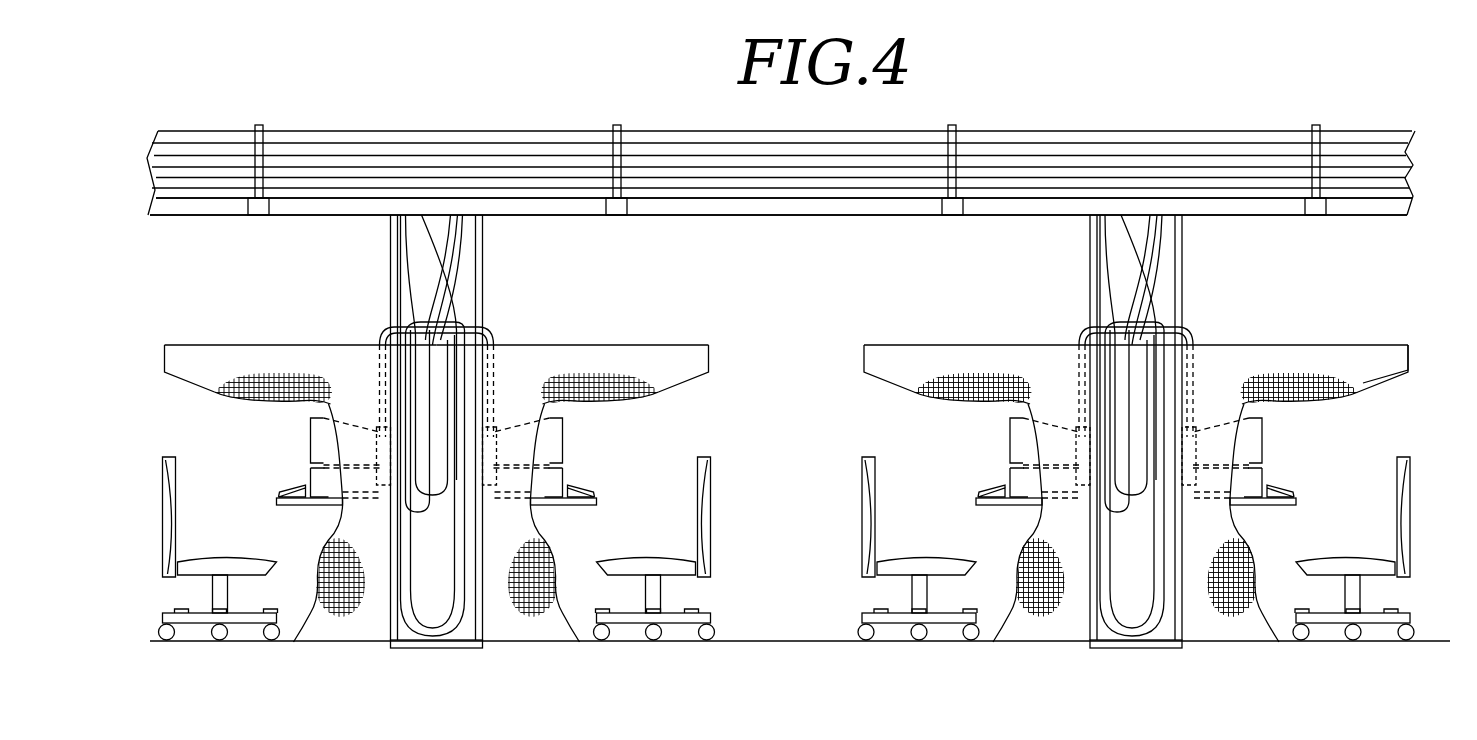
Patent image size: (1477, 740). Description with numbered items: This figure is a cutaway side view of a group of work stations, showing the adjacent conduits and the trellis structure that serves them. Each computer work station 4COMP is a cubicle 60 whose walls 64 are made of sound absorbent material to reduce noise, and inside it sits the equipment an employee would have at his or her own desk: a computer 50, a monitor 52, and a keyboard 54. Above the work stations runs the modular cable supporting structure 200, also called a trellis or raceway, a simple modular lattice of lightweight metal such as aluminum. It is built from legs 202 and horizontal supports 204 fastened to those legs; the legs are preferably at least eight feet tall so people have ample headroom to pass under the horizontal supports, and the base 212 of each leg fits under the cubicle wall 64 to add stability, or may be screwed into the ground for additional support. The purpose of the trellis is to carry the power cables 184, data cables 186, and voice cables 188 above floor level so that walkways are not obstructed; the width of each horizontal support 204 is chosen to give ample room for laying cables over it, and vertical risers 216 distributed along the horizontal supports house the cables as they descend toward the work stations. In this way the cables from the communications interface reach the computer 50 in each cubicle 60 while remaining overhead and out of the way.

The vertical risers 216 is at (256, 126).
The modular cable supporting structure 200 is at (660, 232).
The horizontal supports 204 is at (904, 214).
The legs 202 is at (1080, 237).
The voice cables 188 is at (1183, 247).
The power cables 184 is at (1100, 280).
The data cables 186 is at (1100, 312).
The cubicle walls 64 is at (252, 345).
The cubicle 60 is at (283, 424).
The keyboard 54 is at (990, 489).
The monitor 52 is at (1263, 445).
The computer 50 is at (1263, 474).
The base 212 is at (1132, 648).
The computer work station 4COMP is at (1427, 334).